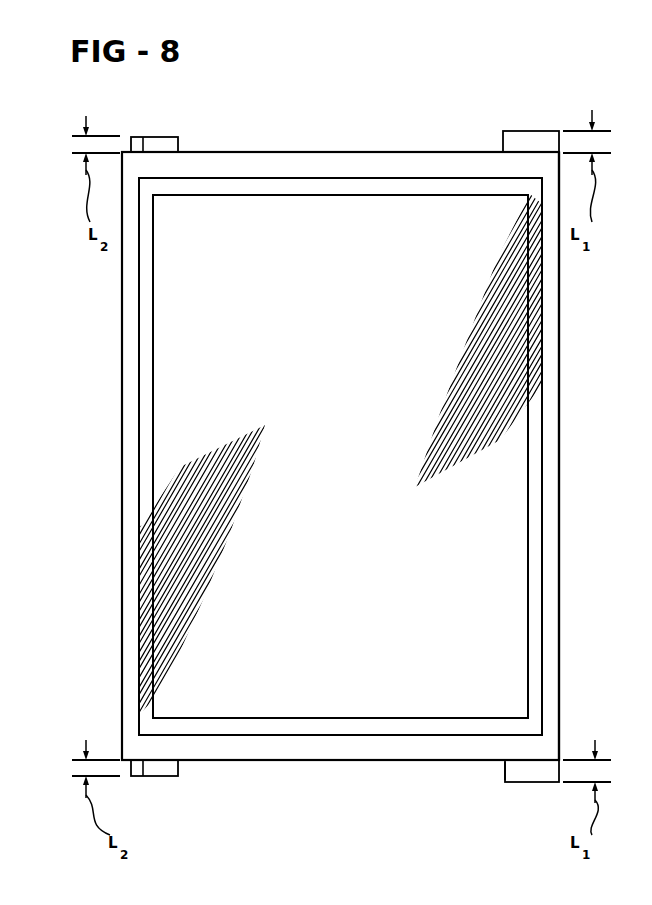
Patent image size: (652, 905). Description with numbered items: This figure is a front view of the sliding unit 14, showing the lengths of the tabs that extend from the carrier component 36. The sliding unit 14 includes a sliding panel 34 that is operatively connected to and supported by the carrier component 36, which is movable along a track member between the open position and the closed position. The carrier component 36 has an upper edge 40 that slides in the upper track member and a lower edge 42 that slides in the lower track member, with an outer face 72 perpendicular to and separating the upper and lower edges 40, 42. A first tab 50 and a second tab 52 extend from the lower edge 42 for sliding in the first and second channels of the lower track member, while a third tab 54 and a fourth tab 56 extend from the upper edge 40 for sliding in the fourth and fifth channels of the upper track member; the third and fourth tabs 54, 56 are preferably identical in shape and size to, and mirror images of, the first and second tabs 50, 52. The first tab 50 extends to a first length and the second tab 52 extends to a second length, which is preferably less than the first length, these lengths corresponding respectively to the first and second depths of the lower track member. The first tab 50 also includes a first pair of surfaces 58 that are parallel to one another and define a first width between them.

The sliding unit 14 is at (436, 116).
The sliding panel 34 is at (332, 304).
The carrier component 36 is at (560, 307).
The upper edge 40 is at (308, 142).
The lower edge 42 is at (313, 773).
The first tab 50 is at (525, 783).
The second tab 52 is at (165, 778).
The third tab 54 is at (530, 131).
The fourth tab 56 is at (166, 137).
The first pair of surfaces 58 is at (525, 770).
The outer face 72 is at (550, 388).